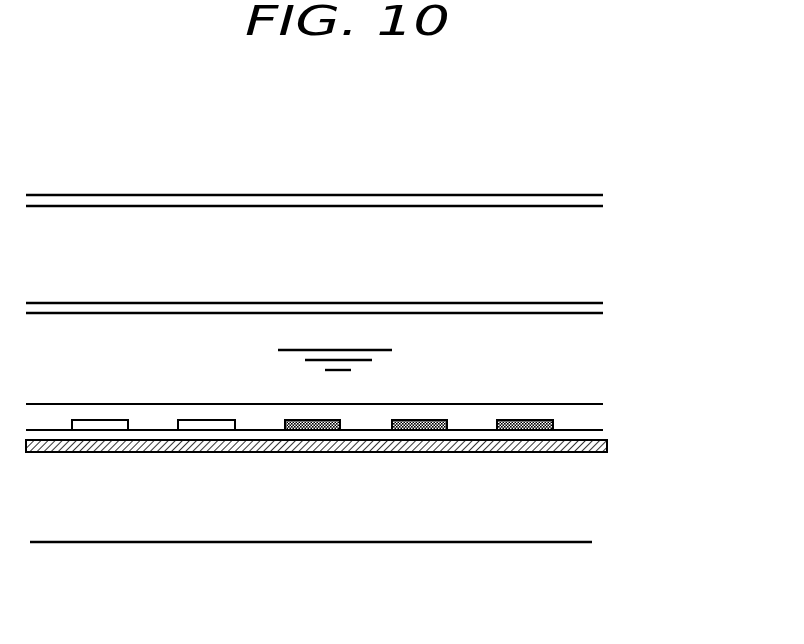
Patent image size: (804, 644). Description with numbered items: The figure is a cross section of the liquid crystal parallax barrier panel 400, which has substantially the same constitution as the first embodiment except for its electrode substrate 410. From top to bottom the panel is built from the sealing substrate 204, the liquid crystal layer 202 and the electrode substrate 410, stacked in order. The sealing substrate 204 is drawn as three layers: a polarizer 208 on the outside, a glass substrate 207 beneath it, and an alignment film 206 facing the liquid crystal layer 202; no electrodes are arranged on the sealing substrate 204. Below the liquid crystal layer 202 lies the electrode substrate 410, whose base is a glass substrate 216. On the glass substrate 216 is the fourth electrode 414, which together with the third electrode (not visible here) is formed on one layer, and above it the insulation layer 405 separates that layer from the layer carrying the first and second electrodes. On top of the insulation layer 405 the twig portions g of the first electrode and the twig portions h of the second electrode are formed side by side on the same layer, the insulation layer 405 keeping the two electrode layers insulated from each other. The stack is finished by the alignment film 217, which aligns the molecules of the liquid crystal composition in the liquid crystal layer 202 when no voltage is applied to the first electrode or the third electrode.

The liquid crystal parallax barrier panel 400 is at (319, 160).
The sealing substrate 204 is at (682, 180).
The polarizer 208 is at (583, 203).
The glass substrate 207 is at (578, 257).
The alignment film 206 is at (590, 307).
The liquid crystal layer 202 is at (583, 364).
The electrode substrate 410 is at (682, 398).
The alignment film 217 is at (585, 419).
The insulation layer 405 is at (588, 441).
The glass substrate 216 is at (583, 508).
The fourth electrode 414 is at (120, 448).
The twig portions of the second electrode h is at (213, 428).
The twig portions of the first electrode g is at (520, 430).